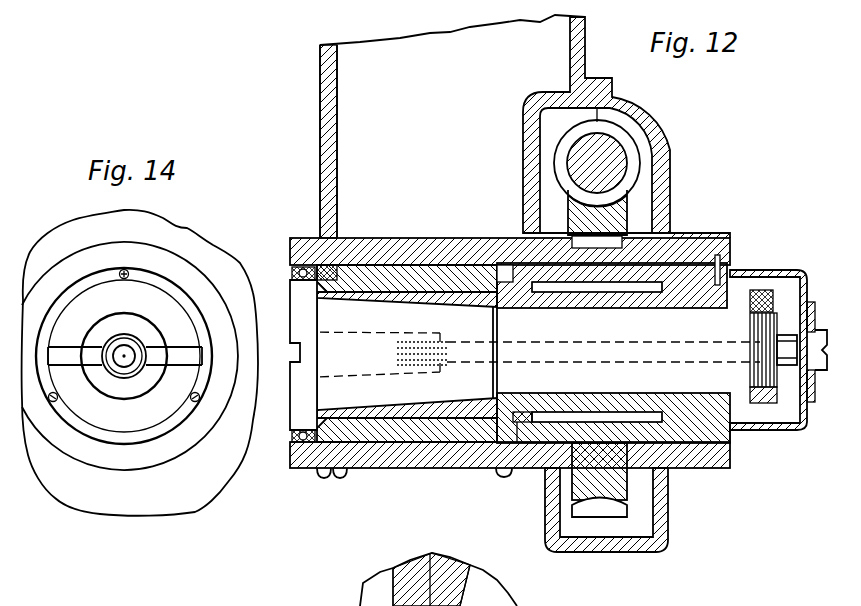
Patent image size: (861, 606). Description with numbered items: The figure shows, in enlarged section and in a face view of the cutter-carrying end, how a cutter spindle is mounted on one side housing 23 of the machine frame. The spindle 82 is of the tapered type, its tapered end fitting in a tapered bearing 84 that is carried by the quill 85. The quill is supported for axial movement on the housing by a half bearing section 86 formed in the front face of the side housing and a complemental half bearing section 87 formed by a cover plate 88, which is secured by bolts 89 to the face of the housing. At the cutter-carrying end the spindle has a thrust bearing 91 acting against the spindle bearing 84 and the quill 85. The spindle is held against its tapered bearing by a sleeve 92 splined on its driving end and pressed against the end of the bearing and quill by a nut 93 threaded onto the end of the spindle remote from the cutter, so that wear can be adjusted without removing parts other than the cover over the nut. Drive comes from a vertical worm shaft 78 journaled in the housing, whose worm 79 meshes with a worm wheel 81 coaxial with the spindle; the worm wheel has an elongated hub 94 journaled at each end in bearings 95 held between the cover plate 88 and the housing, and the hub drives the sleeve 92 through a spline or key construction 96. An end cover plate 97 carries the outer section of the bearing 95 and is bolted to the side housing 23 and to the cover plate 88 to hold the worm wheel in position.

In FIG. 14, the side housing 23 is at (132, 500).
In FIG. 12, the side housing 23 is at (322, 95).
In FIG. 12, the vertical worm shaft 78 is at (607, 152).
In FIG. 12, the worm 79 is at (633, 163).
In FIG. 12, the worm wheel 81 is at (597, 512).
In FIG. 14, the cutter spindle 82 is at (158, 300).
In FIG. 12, the cutter spindle 82 is at (465, 312).
In FIG. 12, the tapered bearing 84 is at (424, 290).
In FIG. 12, the quill 85 is at (347, 476).
In FIG. 12, the half bearing section 86 is at (384, 262).
In FIG. 12, the complemental half bearing section 87 is at (400, 445).
In FIG. 12, the cover plate 88 is at (292, 468).
In FIG. 12, the bolts 89 is at (322, 478).
In FIG. 12, the thrust bearing 91 is at (340, 276).
In FIG. 12, the sleeve 92 is at (725, 295).
In FIG. 12, the nut 93 is at (768, 402).
In FIG. 12, the elongated hub 94 is at (543, 430).
In FIG. 12, the bearings 95 is at (527, 447).
In FIG. 12, the spline or key construction 96 is at (677, 247).
In FIG. 12, the end cover plate 97 is at (668, 550).